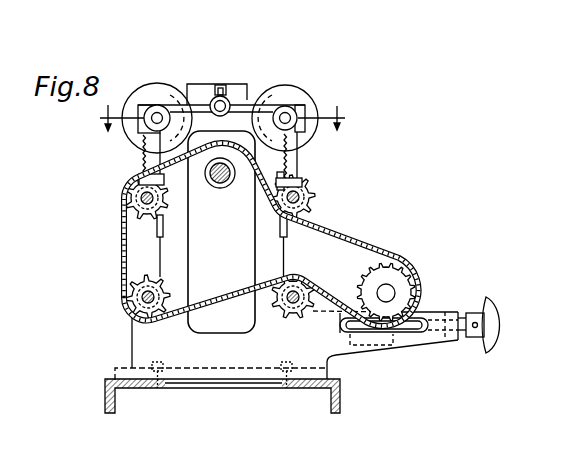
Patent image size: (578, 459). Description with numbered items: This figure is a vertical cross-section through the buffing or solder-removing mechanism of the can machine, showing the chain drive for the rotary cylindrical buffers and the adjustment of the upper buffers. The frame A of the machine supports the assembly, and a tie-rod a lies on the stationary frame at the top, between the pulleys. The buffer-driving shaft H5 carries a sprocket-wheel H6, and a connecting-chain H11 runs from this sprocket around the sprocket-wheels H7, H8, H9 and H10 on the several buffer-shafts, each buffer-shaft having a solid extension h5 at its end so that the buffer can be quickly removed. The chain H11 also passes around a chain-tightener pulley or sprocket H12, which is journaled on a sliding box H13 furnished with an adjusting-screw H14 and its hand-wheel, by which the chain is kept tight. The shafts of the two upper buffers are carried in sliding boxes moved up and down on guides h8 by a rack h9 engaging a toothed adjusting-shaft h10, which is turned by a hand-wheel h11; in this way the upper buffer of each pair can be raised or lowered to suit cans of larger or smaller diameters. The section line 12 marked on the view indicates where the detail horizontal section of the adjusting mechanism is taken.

The hand-wheel h11 is at (158, 94).
The tie-rod a is at (233, 97).
The toothed adjusting-shaft h10 is at (145, 128).
The section line 12 12 is at (224, 118).
The rack h9 is at (302, 157).
The solid extension h5 is at (138, 198).
The sprocket-wheel H10 is at (314, 209).
The connecting-chain H11 is at (348, 242).
The sprocket-wheel H7 is at (133, 208).
The sprocket-wheel H6 is at (218, 186).
The buffer-driving shaft H5 is at (227, 184).
The guides h8 is at (165, 232).
The sprocket-wheel H8 is at (140, 307).
The sprocket-wheel H9 is at (286, 309).
The chain-tightener pulley or sprocket H12 is at (400, 283).
The sliding box H13 is at (387, 353).
The adjusting-screw H14 is at (494, 318).
The frame A is at (178, 372).